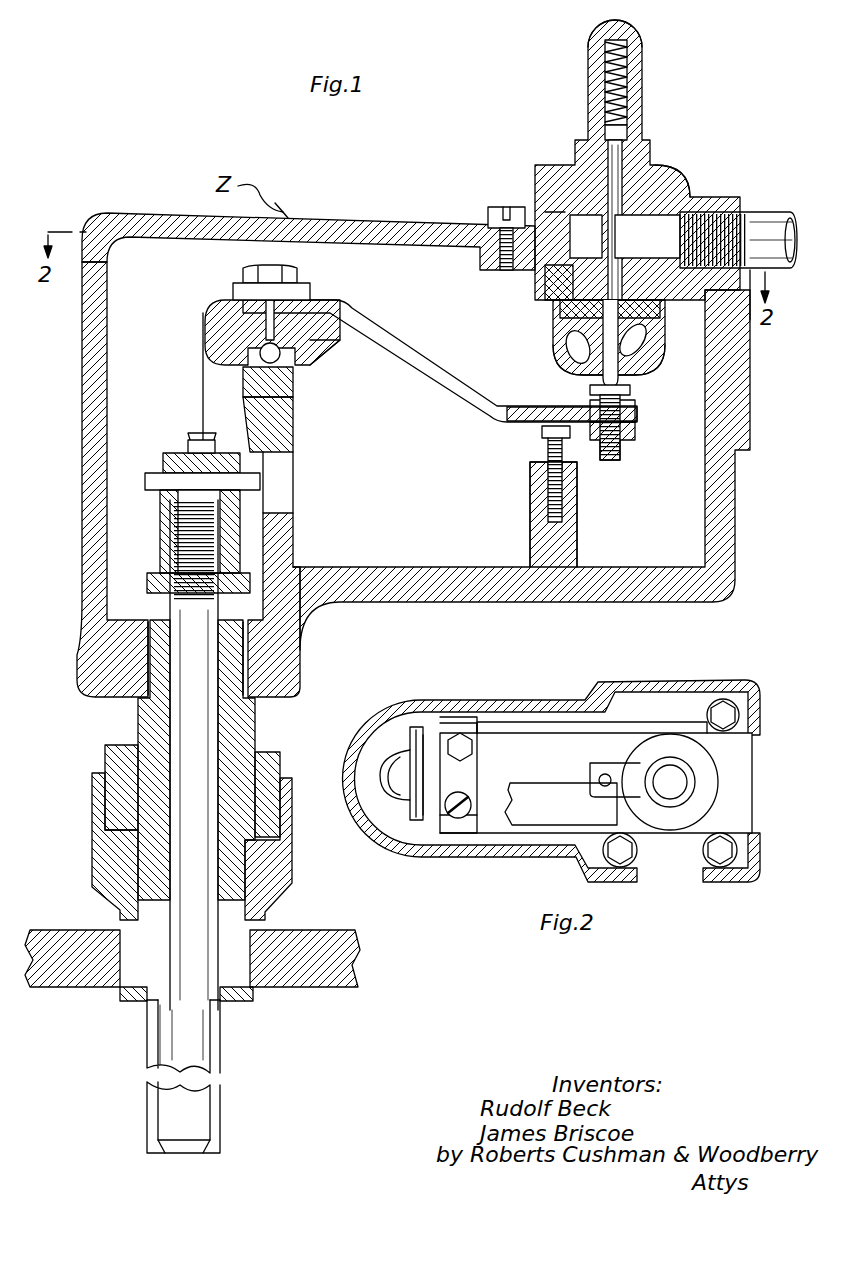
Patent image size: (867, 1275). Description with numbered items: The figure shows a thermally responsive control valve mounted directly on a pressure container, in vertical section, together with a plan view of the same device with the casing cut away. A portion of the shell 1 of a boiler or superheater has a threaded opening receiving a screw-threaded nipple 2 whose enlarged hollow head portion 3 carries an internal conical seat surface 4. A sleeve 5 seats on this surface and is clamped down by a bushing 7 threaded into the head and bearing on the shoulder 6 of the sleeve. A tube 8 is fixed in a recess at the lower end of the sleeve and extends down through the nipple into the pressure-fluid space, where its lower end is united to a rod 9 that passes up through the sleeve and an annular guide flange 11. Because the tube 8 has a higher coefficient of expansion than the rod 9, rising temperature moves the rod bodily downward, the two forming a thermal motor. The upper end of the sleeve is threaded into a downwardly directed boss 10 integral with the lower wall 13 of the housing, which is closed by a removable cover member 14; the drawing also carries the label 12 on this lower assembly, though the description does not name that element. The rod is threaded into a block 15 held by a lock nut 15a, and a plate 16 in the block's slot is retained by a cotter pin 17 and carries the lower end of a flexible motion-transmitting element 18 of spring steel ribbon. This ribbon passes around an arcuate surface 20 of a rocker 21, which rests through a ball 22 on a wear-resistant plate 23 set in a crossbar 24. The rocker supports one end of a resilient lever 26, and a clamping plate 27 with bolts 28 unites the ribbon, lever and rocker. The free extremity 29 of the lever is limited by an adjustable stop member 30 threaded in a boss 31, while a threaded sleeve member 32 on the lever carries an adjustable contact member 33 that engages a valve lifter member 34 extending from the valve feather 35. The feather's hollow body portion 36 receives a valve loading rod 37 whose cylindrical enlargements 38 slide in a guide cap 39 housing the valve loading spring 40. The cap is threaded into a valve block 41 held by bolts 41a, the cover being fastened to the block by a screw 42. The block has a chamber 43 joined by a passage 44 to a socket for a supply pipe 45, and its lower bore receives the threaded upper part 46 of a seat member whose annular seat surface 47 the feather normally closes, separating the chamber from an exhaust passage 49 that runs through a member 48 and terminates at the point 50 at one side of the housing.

In FIG. 1, the shell 1 is at (318, 945).
In FIG. 1, the screw-threaded nipple 2 is at (128, 995).
In FIG. 1, the head portion 3 is at (100, 865).
In FIG. 1, the conical seat surface 4 is at (112, 848).
In FIG. 1, the sleeve 5 is at (257, 725).
In FIG. 1, the shoulder 6 is at (285, 843).
In FIG. 1, the bushing 7 is at (280, 762).
In FIG. 1, the tube 8 is at (147, 1058).
In FIG. 1, the rod 9 is at (165, 1032).
In FIG. 1, the boss 10 is at (302, 660).
In FIG. 1, the annular guide flange 11 is at (165, 618).
In FIG. 1, the bolt 12 is at (194, 755).
In FIG. 1, the lower wall 13 is at (486, 598).
In FIG. 1, the cover member 14 is at (362, 230).
In FIG. 1, the block 15 is at (172, 500).
In FIG. 1, the lock nut 15a is at (160, 578).
In FIG. 1, the plate 16 is at (190, 445).
In FIG. 2, the plate 16 is at (410, 742).
In FIG. 1, the cotter pin 17 is at (160, 478).
In FIG. 2, the cotter pin 17 is at (395, 770).
In FIG. 1, the flexible motion-transmitting element 18 is at (200, 378).
In FIG. 2, the flexible motion-transmitting element 18 is at (432, 740).
In FIG. 1, the arcuate surface 20 is at (225, 352).
In FIG. 1, the rocker 21 is at (318, 332).
In FIG. 1, the ball 22 is at (282, 353).
In FIG. 1, the wear-resistant plate 23 is at (290, 378).
In FIG. 1, the crossbar 24 is at (295, 388).
In FIG. 1, the lever 26 is at (428, 352).
In FIG. 2, the lever 26 is at (598, 730).
In FIG. 1, the clamping plate 27 is at (312, 290).
In FIG. 2, the clamping plate 27 is at (470, 767).
In FIG. 1, the bolts 28 is at (300, 268).
In FIG. 2, the bolts 28 is at (472, 747).
In FIG. 1, the free extremity of the lever 29 is at (555, 405).
In FIG. 1, the adjustable stop member 30 is at (542, 432).
In FIG. 1, the boss 31 is at (535, 470).
In FIG. 1, the internally screw-threaded sleeve member 32 is at (632, 410).
In FIG. 1, the adjustable contact member 33 is at (630, 390).
In FIG. 1, the valve lifter member 34 is at (600, 365).
In FIG. 1, the valve feather 35 is at (585, 315).
In FIG. 1, the hollow body portion 36 is at (510, 303).
In FIG. 1, the valve loading rod 37 is at (665, 190).
In FIG. 1, the cylindrical enlargements 38 is at (625, 130).
In FIG. 1, the guide cap 39 is at (645, 60).
In FIG. 1, the valve loading spring 40 is at (628, 90).
In FIG. 1, the valve block 41 is at (545, 175).
In FIG. 2, the bolts 41a is at (560, 878).
In FIG. 1, the screw 42 is at (488, 213).
In FIG. 1, the chamber 43 is at (578, 215).
In FIG. 1, the passage 44 is at (665, 232).
In FIG. 1, the pipe 45 is at (750, 214).
In FIG. 1, the sleeve-like upper part of valve seat member 46 is at (560, 282).
In FIG. 1, the annular seat surface 47 is at (579, 346).
In FIG. 1, the member 48 is at (650, 372).
In FIG. 2, the member 48 is at (700, 882).
In FIG. 1, the exhaust passage 49 is at (642, 350).
In FIG. 2, the point 50 is at (684, 873).